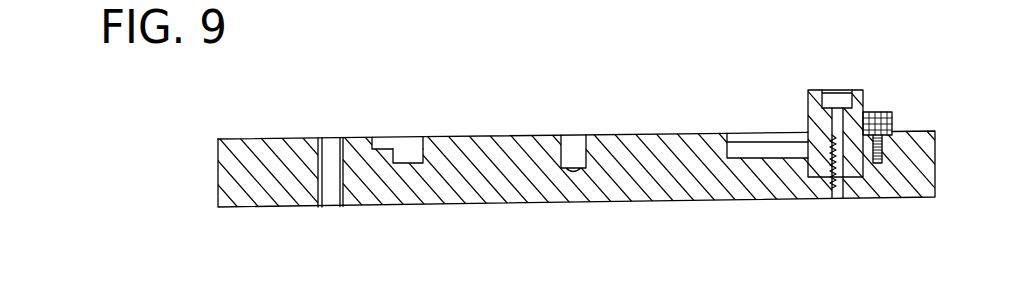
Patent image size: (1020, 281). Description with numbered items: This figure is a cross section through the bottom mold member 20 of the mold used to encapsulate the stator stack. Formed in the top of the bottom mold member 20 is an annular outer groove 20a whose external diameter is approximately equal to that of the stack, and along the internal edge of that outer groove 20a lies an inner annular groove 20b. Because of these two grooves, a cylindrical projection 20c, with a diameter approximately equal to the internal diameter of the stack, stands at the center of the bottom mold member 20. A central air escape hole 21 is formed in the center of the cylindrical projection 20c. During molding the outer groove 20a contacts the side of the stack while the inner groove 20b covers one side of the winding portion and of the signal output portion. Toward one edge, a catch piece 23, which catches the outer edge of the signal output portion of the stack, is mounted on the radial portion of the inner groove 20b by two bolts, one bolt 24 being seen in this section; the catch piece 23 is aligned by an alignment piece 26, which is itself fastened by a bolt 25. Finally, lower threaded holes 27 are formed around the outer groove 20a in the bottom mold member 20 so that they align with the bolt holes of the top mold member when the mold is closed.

The bottom mold member 20 is at (902, 82).
The annular outer groove 20a is at (385, 137).
The inner annular groove 20b is at (407, 163).
The cylindrical projection 20c is at (644, 134).
The central air escape hole 21 is at (573, 146).
The catch piece 23 is at (808, 100).
The bolt 24 is at (838, 93).
The bolt 25 is at (876, 112).
The alignment piece 26 is at (893, 118).
The lower threaded hole 27 is at (330, 150).